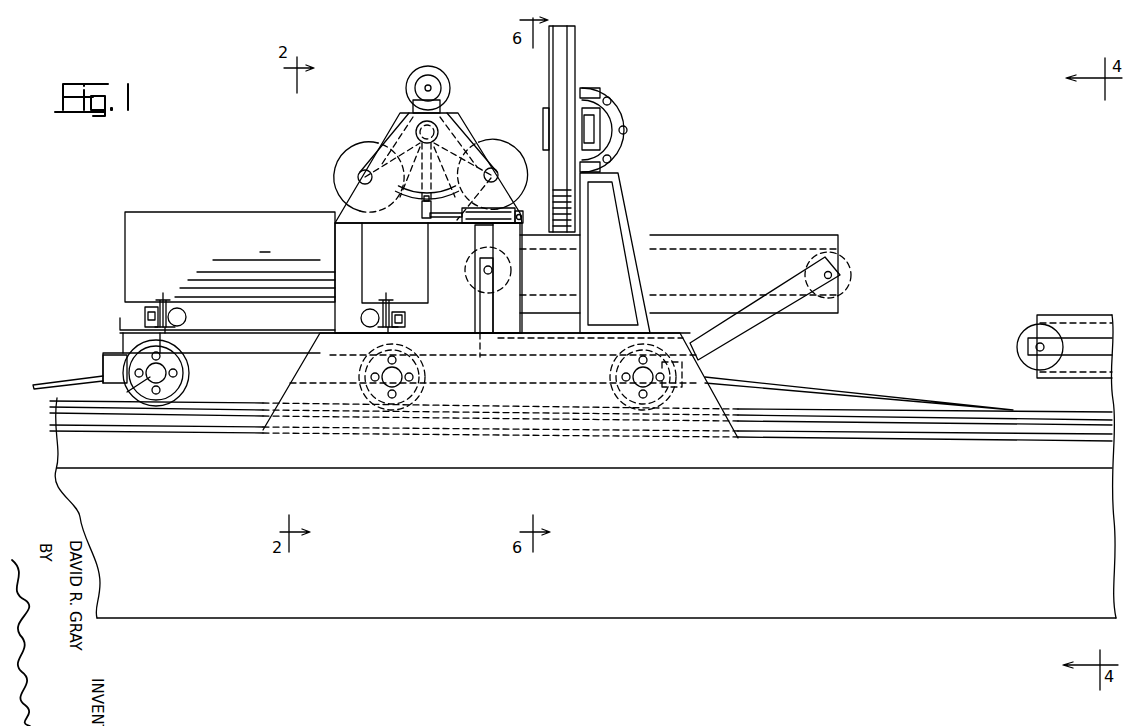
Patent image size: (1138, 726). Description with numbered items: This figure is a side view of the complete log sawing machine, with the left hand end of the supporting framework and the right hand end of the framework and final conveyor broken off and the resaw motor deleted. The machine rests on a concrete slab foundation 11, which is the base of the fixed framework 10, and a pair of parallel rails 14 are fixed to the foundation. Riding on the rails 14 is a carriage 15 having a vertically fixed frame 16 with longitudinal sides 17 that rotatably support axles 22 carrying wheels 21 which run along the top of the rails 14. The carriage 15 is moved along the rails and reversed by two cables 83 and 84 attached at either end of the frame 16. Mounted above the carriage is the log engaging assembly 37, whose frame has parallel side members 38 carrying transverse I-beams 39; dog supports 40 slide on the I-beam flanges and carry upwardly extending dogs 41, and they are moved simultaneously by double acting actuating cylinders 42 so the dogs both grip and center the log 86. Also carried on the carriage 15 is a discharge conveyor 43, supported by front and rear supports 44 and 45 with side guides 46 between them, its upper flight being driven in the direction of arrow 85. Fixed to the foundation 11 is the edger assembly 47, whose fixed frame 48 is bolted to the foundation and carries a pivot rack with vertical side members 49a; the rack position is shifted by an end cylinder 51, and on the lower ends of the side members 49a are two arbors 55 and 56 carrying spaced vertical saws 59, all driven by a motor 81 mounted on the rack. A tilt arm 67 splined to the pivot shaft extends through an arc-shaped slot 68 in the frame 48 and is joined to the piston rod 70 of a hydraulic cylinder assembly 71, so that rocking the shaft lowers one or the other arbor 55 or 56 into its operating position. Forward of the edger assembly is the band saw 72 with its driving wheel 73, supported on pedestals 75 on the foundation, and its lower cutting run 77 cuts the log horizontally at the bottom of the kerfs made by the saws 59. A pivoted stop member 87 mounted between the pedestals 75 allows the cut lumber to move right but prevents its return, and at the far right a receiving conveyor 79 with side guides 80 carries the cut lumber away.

The fixed framework 10 is at (734, 404).
The concrete slab foundation 11 is at (642, 511).
The rails 14 is at (55, 420).
The carriage 15 is at (270, 390).
The frame 16 is at (103, 370).
The longitudinal sides 17 is at (268, 380).
The wheels 21 is at (189, 388).
The axles 22 is at (127, 389).
The log engaging assembly 37 is at (216, 329).
The side members 38 is at (284, 340).
The transverse I-beams 39 is at (166, 329).
The dog supports 40 is at (145, 318).
The dogs 41 is at (165, 296).
The actuating cylinders 42 is at (404, 334).
The discharge conveyor 43 is at (842, 270).
The front support 44 is at (740, 329).
The rear support 45 is at (480, 320).
The side guides 46 is at (813, 232).
The edger assembly 47 is at (389, 127).
The fixed frame 48 is at (412, 220).
The vertical side members 49a is at (470, 142).
The end cylinder 51 is at (416, 134).
The arbor 55 is at (498, 172).
The arbor 56 is at (359, 176).
The vertical saws 59 is at (332, 180).
The tilt arm 67 is at (424, 222).
The slot 68 is at (457, 197).
The piston rod 70 is at (446, 220).
The hydraulic cylinder assembly 71 is at (484, 222).
The band saw 72 is at (585, 65).
The driving wheel 73 is at (580, 78).
The pedestals 75 is at (616, 249).
The lower cutting run 77 is at (568, 44).
The receiving conveyor 79 is at (1063, 311).
The side guides 80 is at (1100, 320).
The motor 81 is at (442, 80).
The cable 83 is at (68, 375).
The cable 84 is at (838, 392).
The arrow 85 is at (752, 231).
The log 86 is at (226, 215).
The pivoted stop member 87 is at (640, 220).